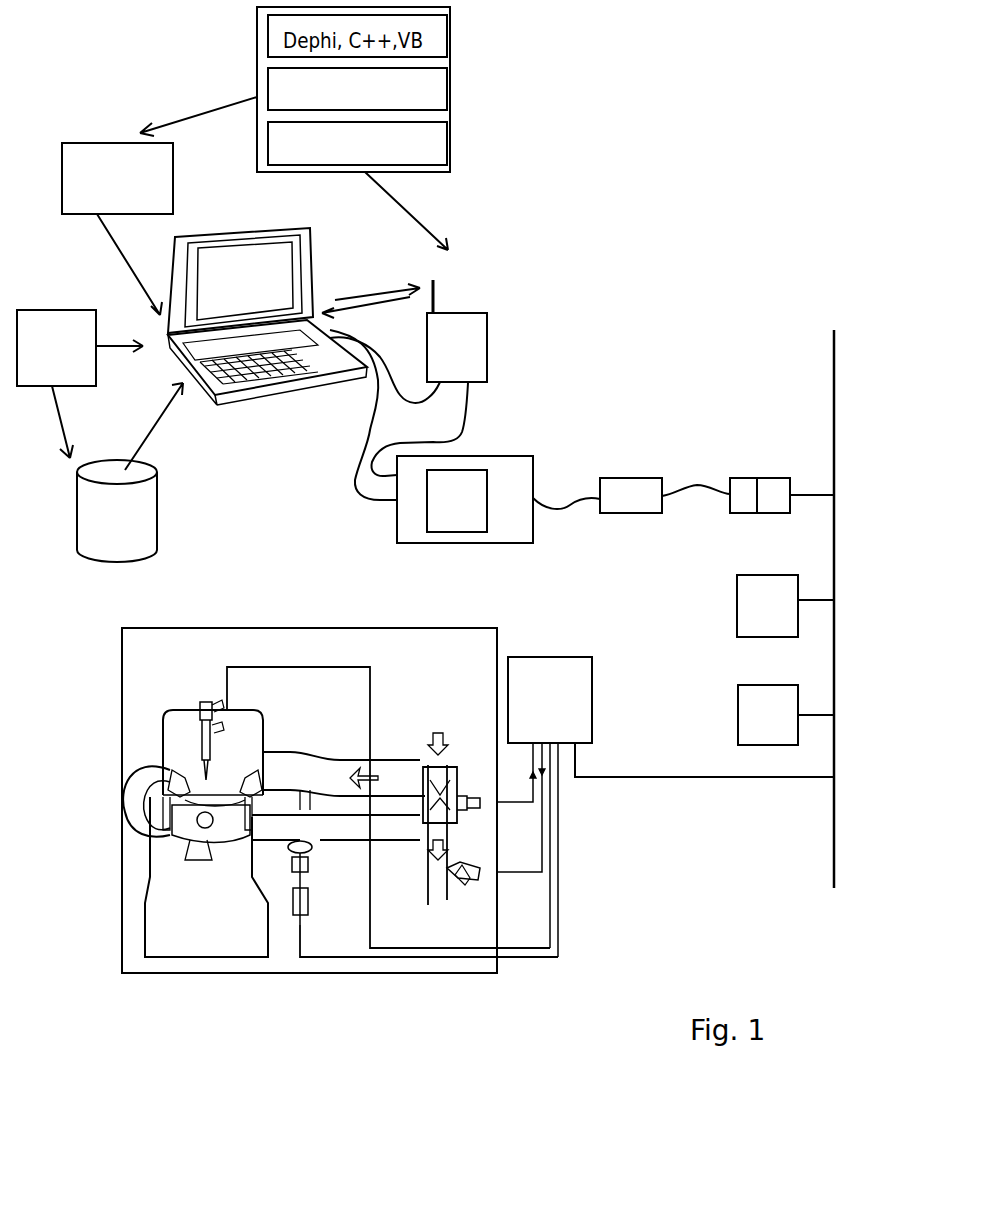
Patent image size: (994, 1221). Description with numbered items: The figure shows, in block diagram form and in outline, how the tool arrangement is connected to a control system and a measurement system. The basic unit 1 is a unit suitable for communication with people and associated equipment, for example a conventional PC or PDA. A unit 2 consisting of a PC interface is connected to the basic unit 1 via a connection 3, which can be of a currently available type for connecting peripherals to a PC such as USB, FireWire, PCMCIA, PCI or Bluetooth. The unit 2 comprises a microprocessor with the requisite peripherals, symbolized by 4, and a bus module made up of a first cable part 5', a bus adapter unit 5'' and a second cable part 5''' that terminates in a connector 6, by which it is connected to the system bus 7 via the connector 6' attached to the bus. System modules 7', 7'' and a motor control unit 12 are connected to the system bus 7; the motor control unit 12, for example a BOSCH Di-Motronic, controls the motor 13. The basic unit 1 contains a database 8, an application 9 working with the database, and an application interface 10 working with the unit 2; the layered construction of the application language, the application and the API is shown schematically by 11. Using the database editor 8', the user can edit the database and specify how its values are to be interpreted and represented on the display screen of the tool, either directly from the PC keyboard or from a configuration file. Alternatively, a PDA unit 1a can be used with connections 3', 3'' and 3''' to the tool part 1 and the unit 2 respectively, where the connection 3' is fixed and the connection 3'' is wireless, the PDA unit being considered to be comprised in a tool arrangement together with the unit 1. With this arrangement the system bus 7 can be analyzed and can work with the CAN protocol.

The basic unit 1 is at (258, 226).
The PDA unit 1a is at (472, 328).
The PC interface unit 2 is at (465, 478).
The connection 3 is at (356, 415).
The fixed connection 3' is at (385, 361).
The wireless connection 3'' is at (371, 283).
The connection 3''' is at (420, 429).
The microprocessor 4 is at (457, 501).
The first cable part 5' is at (566, 480).
The bus adapter unit 5'' is at (631, 470).
The second cable part 5''' is at (696, 464).
The connector 6 is at (734, 472).
The bus connector 6' is at (788, 472).
The system bus 7 is at (807, 609).
The system module 7' is at (785, 606).
The system module 7'' is at (786, 715).
The database 8 is at (130, 472).
The database editor 8' is at (80, 384).
The application 9 is at (117, 229).
The application interface (API) 10 is at (422, 152).
The software construction 11 is at (452, 113).
The motor control unit 12 is at (575, 688).
The motor 13 is at (455, 653).